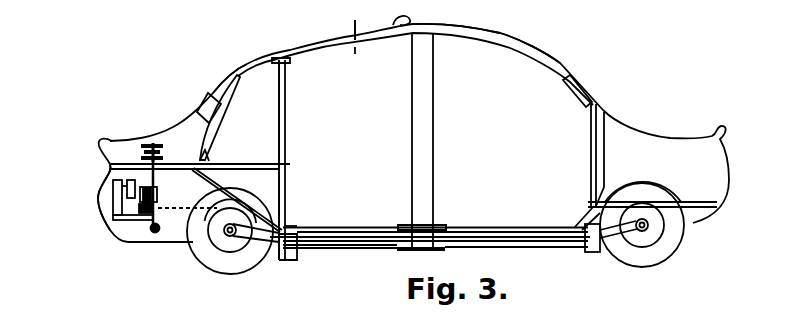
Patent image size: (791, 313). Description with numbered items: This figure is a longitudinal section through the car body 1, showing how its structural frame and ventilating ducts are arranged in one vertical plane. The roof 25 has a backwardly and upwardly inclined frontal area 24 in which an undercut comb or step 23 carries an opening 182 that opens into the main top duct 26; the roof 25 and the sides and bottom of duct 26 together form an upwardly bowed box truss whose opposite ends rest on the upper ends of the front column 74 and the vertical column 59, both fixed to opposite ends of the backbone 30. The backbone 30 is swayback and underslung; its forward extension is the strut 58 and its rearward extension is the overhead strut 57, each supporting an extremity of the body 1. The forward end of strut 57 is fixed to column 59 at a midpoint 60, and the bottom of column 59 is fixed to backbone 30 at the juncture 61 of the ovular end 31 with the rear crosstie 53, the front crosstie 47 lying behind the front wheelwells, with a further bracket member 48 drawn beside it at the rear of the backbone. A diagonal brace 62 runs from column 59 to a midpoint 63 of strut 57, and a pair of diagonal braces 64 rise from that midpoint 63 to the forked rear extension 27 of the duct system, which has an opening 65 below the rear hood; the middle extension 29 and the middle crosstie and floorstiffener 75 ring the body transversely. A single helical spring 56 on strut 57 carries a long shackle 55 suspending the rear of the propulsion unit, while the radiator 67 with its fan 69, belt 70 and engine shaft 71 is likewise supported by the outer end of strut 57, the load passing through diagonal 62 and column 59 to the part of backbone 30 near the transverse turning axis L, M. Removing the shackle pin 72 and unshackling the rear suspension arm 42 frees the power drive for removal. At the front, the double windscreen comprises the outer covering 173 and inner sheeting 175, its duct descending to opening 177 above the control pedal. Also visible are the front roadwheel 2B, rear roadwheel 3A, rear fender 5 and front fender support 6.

The body 1 is at (218, 84).
The opening 182 is at (396, 22).
The undercut comb or step 23 is at (396, 22).
The frontal area of car roof 24 is at (499, 33).
The car roof 25 is at (324, 40).
The main top duct 26 is at (326, 46).
The rear extension 27 is at (250, 84).
The middle extension 29 is at (436, 152).
The ovular end of backbone 31 is at (298, 230).
The backbone 30 is at (398, 246).
The rear roadwheel 3A is at (199, 256).
The rear suspension arm 42 is at (253, 255).
The crosstie 47 is at (578, 253).
The rear axle link 48 is at (610, 248).
The rear crosstie 53 is at (298, 254).
The shackle 55 is at (158, 178).
The helical spring 56 is at (165, 150).
The overhead strut 57 is at (247, 164).
The strut 58 is at (714, 198).
The vertical column 59 is at (287, 153).
The midpoint 60 is at (290, 163).
The juncture 61 is at (287, 226).
The diagonal brace 62 is at (262, 208).
The midpoint of strut 63 is at (200, 163).
The diagonal braces 64 is at (209, 161).
The opening 65 is at (215, 128).
The radiator 67 is at (99, 188).
The fan 69 is at (141, 191).
The belt 70 is at (143, 193).
The engine shaft 71 is at (181, 200).
The shackle pin 72 is at (160, 229).
The front column 74 is at (588, 150).
The middle crosstie and floorstiffener 75 is at (432, 249).
The glazed or plastics covering 173 is at (601, 98).
The transparent plastics sheeting 175 is at (578, 100).
The opening 177 is at (600, 183).
The front roadwheel 2B is at (686, 253).
The rear fender 5 is at (375, 221).
The front fender support 6 is at (292, 212).
The transverse turning axis L is at (353, 20).
The transverse turning axis M is at (357, 218).